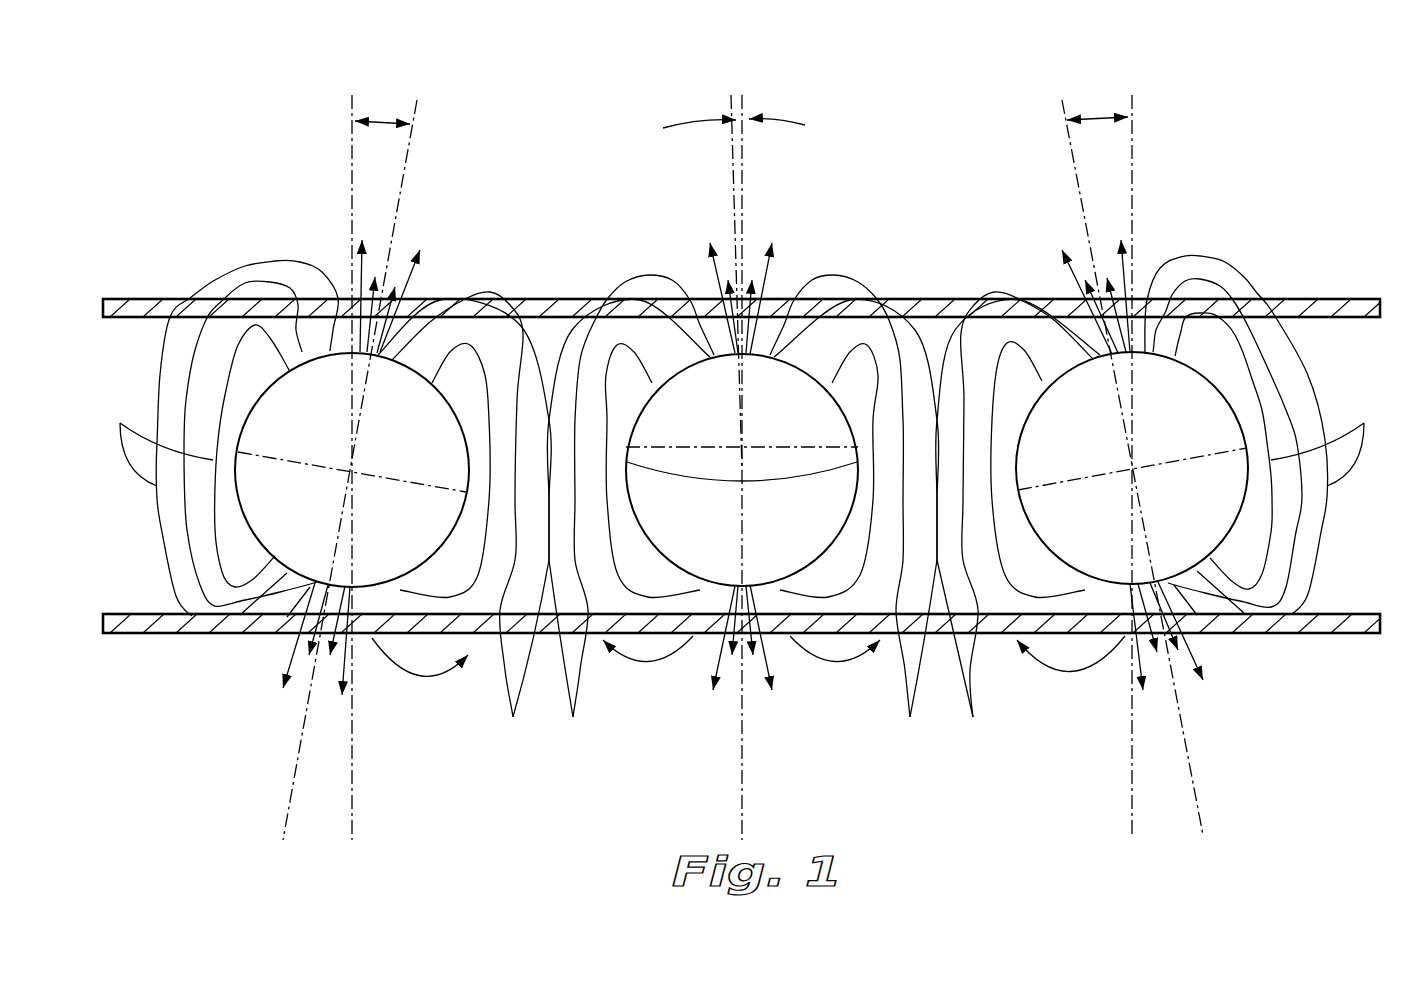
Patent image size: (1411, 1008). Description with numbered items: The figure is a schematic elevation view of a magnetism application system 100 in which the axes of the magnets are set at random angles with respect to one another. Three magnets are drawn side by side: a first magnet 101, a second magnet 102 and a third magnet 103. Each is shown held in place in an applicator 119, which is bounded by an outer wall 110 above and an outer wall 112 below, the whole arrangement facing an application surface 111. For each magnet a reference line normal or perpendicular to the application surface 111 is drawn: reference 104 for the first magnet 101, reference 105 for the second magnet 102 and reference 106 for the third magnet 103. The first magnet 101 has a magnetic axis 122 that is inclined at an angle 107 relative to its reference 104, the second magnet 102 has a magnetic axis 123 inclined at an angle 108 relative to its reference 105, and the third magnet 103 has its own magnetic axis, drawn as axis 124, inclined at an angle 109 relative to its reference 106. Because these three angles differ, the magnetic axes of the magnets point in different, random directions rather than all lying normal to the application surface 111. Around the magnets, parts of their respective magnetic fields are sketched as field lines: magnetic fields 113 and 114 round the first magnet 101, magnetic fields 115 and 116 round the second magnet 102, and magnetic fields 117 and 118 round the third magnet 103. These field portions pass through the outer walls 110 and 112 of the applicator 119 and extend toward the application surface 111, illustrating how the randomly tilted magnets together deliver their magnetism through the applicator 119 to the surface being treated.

The magnetism application system 100 is at (917, 110).
The first magnet 101 is at (433, 459).
The second magnet 102 is at (813, 502).
The third magnet 103 is at (1196, 442).
The reference 104 is at (350, 172).
The reference 105 is at (748, 165).
The reference 106 is at (1134, 158).
The angle 107 is at (384, 122).
The angle 108 is at (785, 120).
The angle 109 is at (1097, 119).
The outer wall 110 is at (130, 305).
The application surface 111 is at (549, 298).
The outer wall 112 is at (143, 635).
The magnetic field 113 is at (155, 435).
The magnetic field 114 is at (518, 659).
The magnetic field 115 is at (574, 659).
The magnetic field 116 is at (902, 657).
The magnetic field 117 is at (976, 657).
The magnetic field 118 is at (1331, 434).
The applicator 119 is at (152, 360).
The magnetic axis 122 is at (408, 170).
The magnetic axis 123 is at (734, 162).
The magnetic axis of third sphere 124 is at (1068, 137).